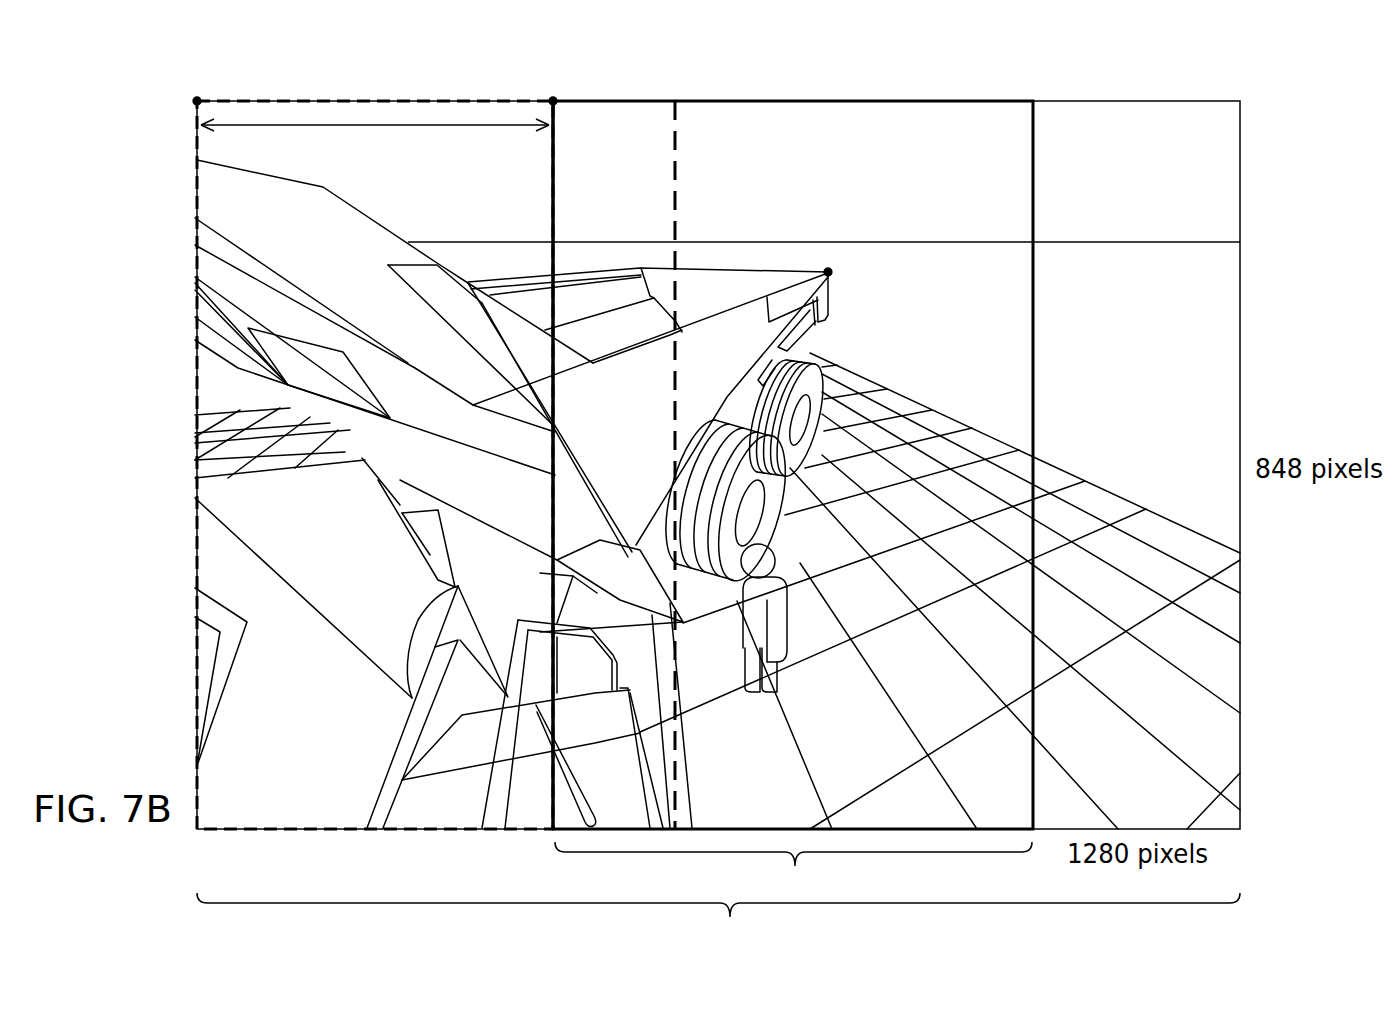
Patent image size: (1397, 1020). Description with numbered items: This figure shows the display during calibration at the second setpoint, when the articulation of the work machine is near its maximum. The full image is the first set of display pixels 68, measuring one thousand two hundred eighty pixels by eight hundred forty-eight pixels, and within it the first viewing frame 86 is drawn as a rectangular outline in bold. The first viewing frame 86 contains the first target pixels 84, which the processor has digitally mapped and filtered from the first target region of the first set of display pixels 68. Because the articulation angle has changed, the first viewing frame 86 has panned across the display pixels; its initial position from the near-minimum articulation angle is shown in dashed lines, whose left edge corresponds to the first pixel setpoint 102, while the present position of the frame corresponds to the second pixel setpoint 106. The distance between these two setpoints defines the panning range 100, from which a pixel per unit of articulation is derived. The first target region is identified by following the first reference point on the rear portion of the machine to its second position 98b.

The first pixel setpoint 102 is at (193, 94).
The second pixel setpoint 106 is at (551, 94).
The first viewing frame 86 is at (958, 92).
The panning range 100 is at (375, 141).
The second position of the first reference point 98b is at (843, 259).
The first target pixels 84 is at (793, 870).
The first set of display pixels 68 is at (718, 921).